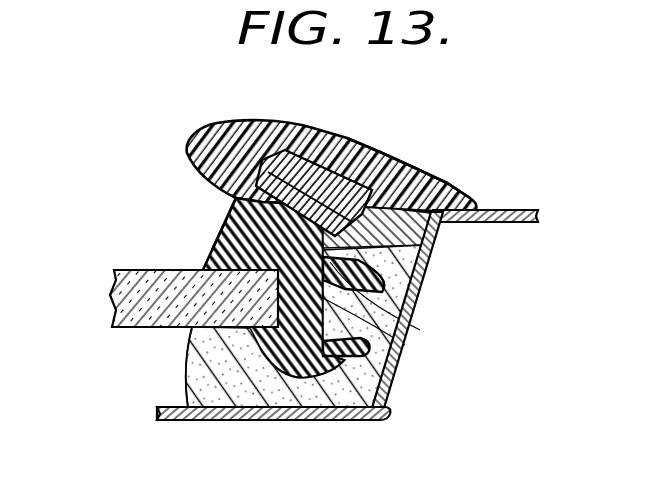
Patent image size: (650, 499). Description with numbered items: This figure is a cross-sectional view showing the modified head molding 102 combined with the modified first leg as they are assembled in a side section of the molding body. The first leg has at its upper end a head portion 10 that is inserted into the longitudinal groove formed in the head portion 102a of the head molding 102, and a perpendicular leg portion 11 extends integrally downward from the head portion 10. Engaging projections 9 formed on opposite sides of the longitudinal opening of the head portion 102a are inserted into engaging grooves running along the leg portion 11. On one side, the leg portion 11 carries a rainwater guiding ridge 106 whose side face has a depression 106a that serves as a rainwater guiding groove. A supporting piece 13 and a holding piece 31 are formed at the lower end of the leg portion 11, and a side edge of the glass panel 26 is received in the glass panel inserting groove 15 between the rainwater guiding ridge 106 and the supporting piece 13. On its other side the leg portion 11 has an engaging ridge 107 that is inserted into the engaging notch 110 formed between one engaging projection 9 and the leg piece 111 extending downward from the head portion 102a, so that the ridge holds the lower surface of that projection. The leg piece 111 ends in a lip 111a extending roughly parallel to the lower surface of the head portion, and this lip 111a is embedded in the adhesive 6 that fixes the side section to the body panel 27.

The adhesive 6 is at (188, 421).
The engaging projection 9 is at (216, 150).
The head portion 10 is at (307, 133).
The leg portion 11 is at (383, 307).
The supporting piece 13 is at (251, 409).
The glass panel inserting groove 15 is at (193, 333).
The glass panel 26 is at (125, 296).
The body panel 27 is at (517, 210).
The holding piece 31 is at (355, 421).
The head molding 102 is at (398, 149).
The head portion 102a is at (380, 183).
The rainwater guiding ridge 106 is at (226, 228).
The depression 106a is at (224, 233).
The engaging ridge 107 is at (398, 272).
The engaging notch 110 is at (438, 233).
The leg piece 111 is at (407, 257).
The lip 111a is at (397, 293).